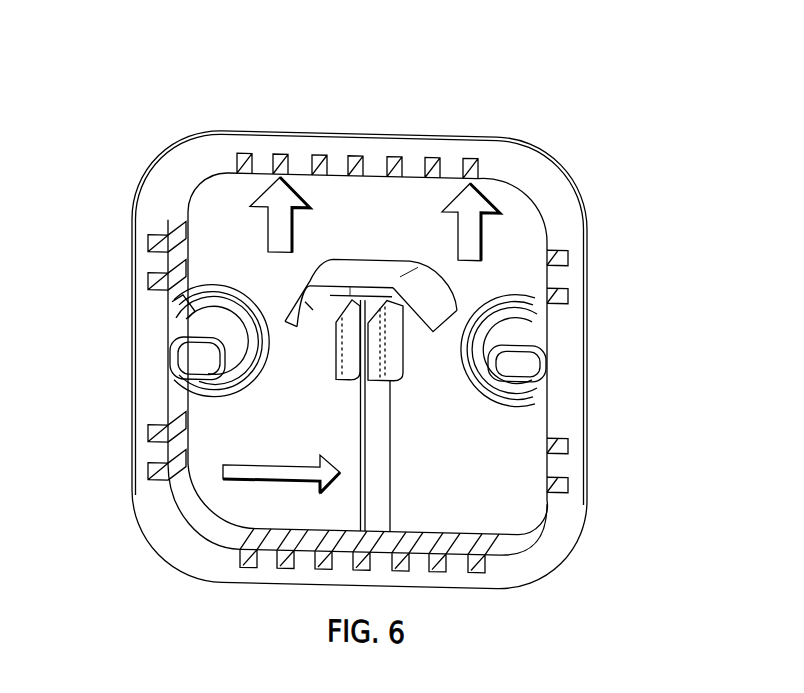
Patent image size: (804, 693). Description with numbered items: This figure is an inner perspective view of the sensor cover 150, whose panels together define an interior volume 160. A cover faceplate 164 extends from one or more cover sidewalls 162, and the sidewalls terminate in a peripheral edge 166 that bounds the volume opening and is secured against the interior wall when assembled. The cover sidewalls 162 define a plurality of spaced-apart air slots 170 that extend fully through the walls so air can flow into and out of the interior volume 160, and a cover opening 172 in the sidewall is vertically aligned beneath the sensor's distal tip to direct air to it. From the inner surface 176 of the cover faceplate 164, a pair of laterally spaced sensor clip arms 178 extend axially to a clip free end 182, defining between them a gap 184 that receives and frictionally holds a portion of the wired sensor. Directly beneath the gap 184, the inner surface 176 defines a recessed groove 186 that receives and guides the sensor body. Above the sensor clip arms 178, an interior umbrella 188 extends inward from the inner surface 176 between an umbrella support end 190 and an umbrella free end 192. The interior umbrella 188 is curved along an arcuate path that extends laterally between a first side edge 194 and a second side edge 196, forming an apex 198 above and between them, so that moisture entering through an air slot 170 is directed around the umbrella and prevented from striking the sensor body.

The sensor cover 150 is at (210, 133).
The interior volume 160 is at (196, 206).
The cover sidewall 162 is at (176, 420).
The cover faceplate 164 is at (522, 216).
The peripheral edge 166 is at (175, 551).
The air slots 170 is at (285, 575).
The cover opening 172 is at (376, 533).
The inner surface 176 is at (513, 518).
The sensor clip arms 178 is at (343, 369).
The clip free end 182 is at (334, 472).
The gap 184 is at (382, 301).
The recessed groove 186 is at (390, 438).
The interior umbrella 188 is at (318, 273).
The umbrella support end 190 is at (390, 251).
The umbrella free end 192 is at (331, 299).
The first side edge 194 is at (283, 339).
The second side edge 196 is at (452, 321).
The apex 198 is at (360, 275).